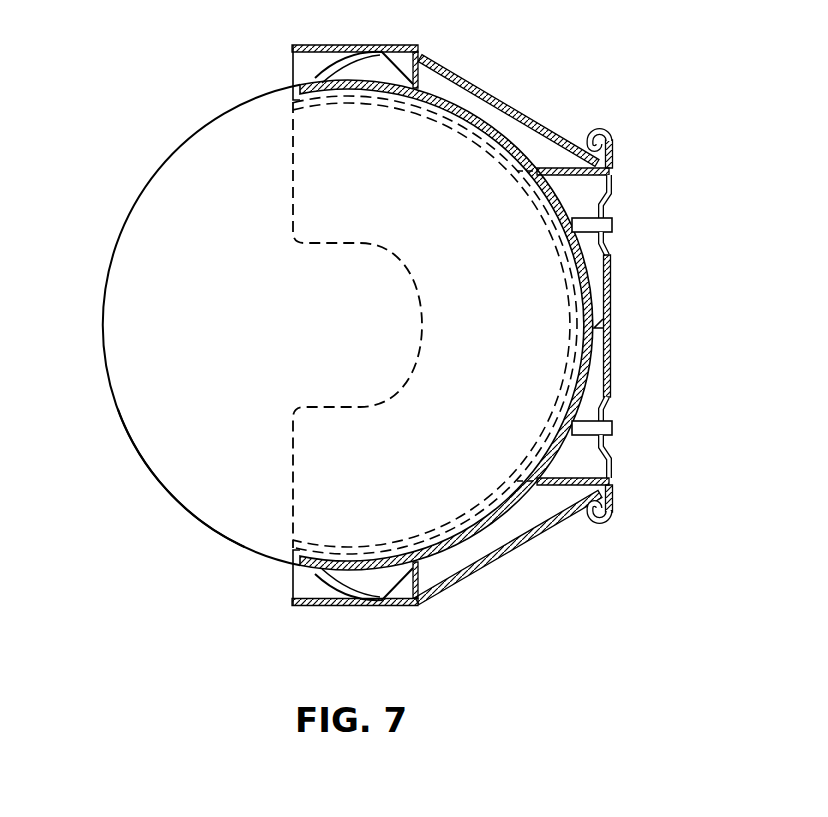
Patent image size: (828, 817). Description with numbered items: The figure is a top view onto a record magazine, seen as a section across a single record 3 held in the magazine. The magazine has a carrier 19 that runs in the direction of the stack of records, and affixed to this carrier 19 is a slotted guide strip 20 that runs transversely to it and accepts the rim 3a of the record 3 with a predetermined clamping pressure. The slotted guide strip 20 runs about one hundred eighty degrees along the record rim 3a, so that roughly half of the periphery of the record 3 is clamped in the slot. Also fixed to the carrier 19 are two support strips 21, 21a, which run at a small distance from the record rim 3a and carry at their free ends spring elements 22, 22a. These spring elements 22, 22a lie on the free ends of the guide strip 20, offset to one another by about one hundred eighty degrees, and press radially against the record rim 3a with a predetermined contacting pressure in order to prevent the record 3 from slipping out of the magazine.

The record 3 is at (190, 243).
The rim 3a is at (187, 512).
The carrier 19 is at (610, 292).
The slotted guide strip 20 is at (490, 122).
The support strip 21 is at (423, 55).
The support strip 21a is at (413, 600).
The spring element 22 is at (320, 78).
The spring element 22a is at (320, 581).